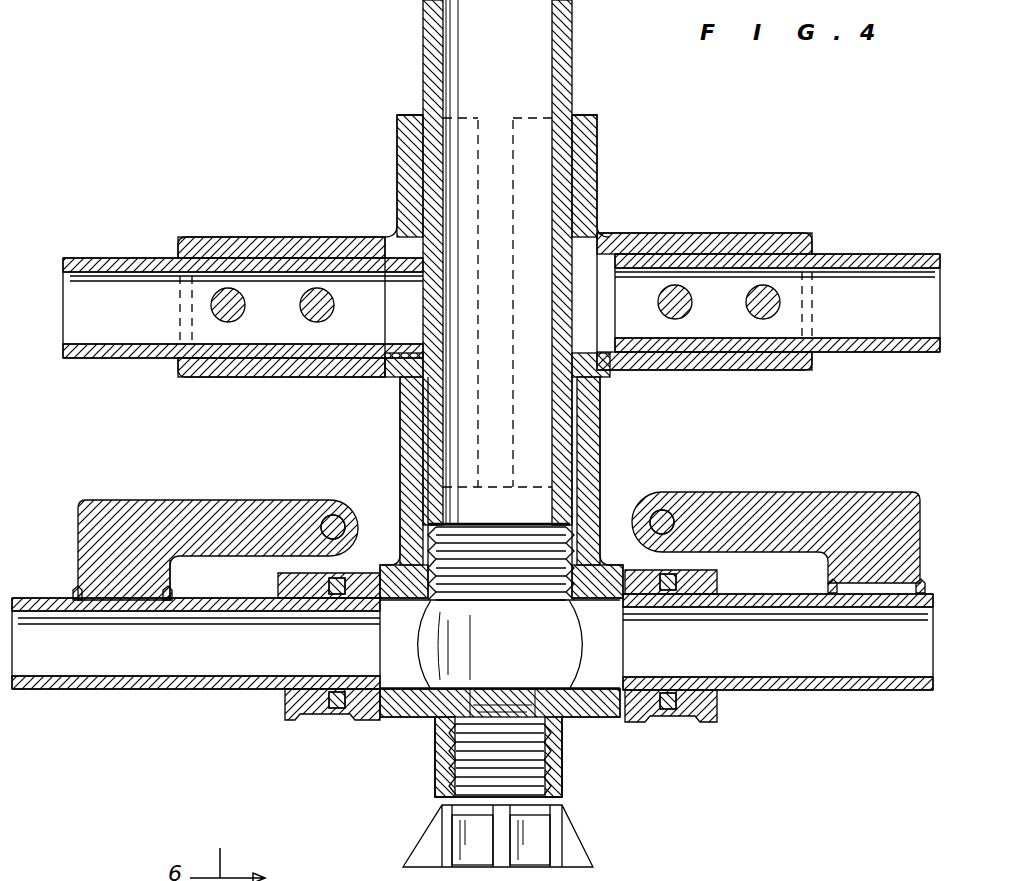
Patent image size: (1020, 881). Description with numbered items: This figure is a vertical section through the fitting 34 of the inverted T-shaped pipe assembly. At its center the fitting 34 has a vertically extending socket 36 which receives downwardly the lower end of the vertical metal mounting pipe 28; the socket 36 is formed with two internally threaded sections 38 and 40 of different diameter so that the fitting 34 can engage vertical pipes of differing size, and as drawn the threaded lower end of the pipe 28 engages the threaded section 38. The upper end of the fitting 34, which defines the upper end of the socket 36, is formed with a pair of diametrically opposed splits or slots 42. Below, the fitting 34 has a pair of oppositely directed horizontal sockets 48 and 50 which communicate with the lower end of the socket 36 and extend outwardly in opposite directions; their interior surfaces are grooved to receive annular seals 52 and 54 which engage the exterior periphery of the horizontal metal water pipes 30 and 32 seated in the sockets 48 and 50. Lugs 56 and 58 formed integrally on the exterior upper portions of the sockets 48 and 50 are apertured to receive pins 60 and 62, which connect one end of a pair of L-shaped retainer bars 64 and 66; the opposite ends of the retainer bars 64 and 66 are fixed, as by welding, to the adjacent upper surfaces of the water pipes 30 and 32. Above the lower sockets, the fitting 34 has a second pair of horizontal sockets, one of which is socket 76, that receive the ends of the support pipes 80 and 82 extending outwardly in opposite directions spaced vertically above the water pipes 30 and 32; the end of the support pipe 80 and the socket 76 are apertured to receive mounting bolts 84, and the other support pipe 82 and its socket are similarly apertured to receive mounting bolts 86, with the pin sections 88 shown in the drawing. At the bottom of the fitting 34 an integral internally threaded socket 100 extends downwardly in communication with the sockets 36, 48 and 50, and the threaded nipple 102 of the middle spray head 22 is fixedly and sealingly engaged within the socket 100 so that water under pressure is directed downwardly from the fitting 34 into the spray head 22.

The spray head 22 is at (612, 867).
The vertical metal pipe 28 is at (440, 43).
The horizontally extending metal water pipe 30 is at (128, 690).
The horizontally extending metal water pipe 32 is at (845, 692).
The fitting 34 is at (610, 217).
The vertically extending socket 36 is at (600, 425).
The internally threaded section 38 is at (432, 522).
The internally threaded section 40 is at (572, 588).
The split or slot 42 is at (510, 170).
The horizontal socket 48 is at (345, 722).
The horizontal socket 50 is at (650, 722).
The annular seal 52 is at (292, 722).
The annular seal 54 is at (690, 722).
The lug 56 is at (382, 572).
The lug 58 is at (640, 500).
The pin 60 is at (320, 512).
The pin 62 is at (675, 505).
The L-shaped retainer bar 64 is at (205, 500).
The L-shaped retainer bar 66 is at (826, 498).
The horizontally extending socket 76 is at (300, 238).
The support pipe 80 is at (82, 258).
The support pipe 82 is at (917, 254).
The mounting bolt 84 is at (317, 322).
The mounting bolt 86 is at (758, 250).
The right pins 88 is at (719, 302).
The internally threaded socket 100 is at (435, 760).
The threaded nipple 102 is at (565, 800).